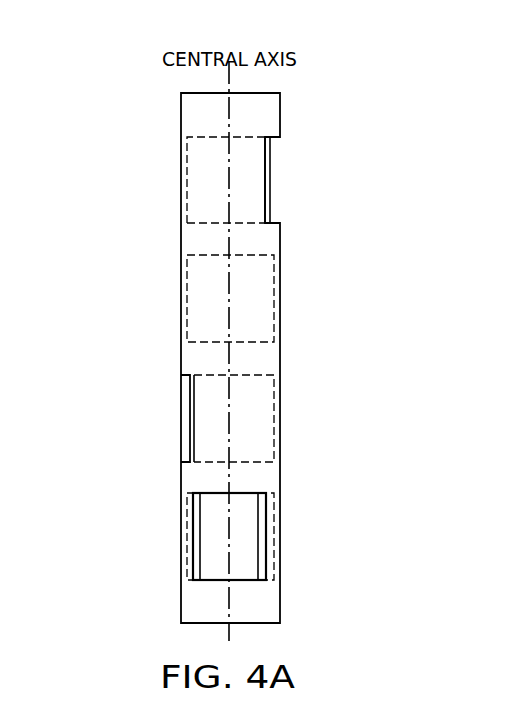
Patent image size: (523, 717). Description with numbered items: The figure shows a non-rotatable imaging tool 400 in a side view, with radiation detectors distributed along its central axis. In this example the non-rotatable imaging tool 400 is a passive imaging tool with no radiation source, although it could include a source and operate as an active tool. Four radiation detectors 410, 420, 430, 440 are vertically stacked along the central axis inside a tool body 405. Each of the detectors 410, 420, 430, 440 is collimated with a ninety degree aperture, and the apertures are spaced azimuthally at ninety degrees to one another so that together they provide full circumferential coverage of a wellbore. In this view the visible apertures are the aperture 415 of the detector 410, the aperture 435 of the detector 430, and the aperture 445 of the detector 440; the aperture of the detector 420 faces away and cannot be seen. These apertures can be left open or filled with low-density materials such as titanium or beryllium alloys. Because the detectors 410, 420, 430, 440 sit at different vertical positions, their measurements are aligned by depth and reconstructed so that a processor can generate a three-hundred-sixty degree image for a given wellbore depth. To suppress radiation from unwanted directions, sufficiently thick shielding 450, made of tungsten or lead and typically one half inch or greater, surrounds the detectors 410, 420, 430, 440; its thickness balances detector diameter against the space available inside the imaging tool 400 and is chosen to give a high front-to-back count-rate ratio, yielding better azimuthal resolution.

The non-rotatable imaging tool 400 is at (106, 66).
The tool body 405 is at (181, 134).
The radiation detector 410 is at (187, 180).
The collimator aperture 415 is at (272, 138).
The radiation detector 420 is at (187, 297).
The radiation detector 430 is at (276, 402).
The collimator aperture 435 is at (190, 462).
The radiation detector 440 is at (276, 522).
The collimator aperture 445 is at (214, 579).
The shielding 450 is at (270, 598).